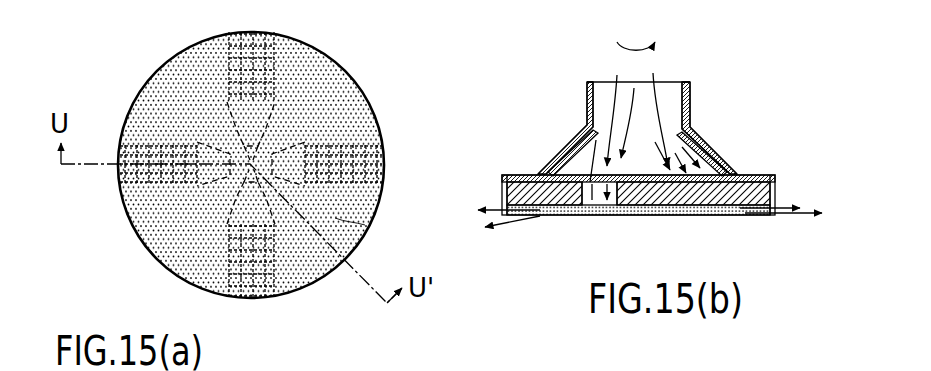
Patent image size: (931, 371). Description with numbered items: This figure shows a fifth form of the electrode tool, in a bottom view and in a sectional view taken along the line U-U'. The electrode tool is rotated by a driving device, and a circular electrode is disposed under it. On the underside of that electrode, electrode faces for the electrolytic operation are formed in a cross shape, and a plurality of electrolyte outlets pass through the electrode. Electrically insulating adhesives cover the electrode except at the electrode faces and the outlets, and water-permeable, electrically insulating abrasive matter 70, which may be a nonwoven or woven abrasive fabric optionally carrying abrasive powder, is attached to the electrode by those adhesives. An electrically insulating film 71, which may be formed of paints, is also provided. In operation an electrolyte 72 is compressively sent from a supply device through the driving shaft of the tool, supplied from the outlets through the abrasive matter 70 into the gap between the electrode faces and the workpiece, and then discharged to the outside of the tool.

The abrasive matter 70 is at (695, 216).
The electrically insulating film 71 is at (765, 175).
The electrolyte 72 is at (658, 85).